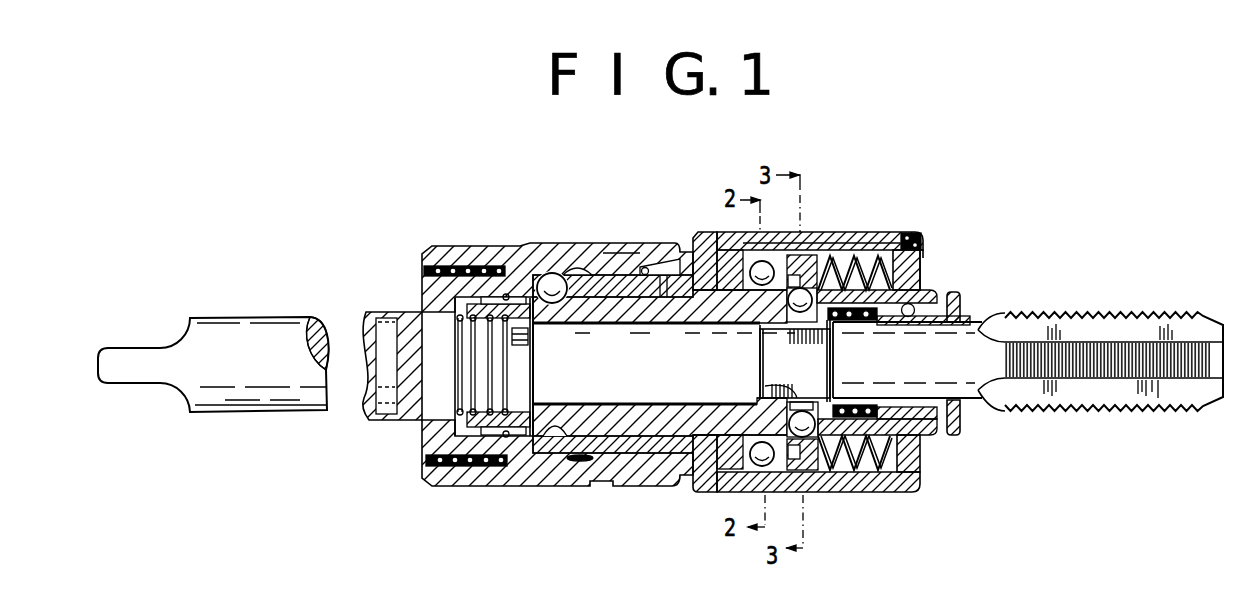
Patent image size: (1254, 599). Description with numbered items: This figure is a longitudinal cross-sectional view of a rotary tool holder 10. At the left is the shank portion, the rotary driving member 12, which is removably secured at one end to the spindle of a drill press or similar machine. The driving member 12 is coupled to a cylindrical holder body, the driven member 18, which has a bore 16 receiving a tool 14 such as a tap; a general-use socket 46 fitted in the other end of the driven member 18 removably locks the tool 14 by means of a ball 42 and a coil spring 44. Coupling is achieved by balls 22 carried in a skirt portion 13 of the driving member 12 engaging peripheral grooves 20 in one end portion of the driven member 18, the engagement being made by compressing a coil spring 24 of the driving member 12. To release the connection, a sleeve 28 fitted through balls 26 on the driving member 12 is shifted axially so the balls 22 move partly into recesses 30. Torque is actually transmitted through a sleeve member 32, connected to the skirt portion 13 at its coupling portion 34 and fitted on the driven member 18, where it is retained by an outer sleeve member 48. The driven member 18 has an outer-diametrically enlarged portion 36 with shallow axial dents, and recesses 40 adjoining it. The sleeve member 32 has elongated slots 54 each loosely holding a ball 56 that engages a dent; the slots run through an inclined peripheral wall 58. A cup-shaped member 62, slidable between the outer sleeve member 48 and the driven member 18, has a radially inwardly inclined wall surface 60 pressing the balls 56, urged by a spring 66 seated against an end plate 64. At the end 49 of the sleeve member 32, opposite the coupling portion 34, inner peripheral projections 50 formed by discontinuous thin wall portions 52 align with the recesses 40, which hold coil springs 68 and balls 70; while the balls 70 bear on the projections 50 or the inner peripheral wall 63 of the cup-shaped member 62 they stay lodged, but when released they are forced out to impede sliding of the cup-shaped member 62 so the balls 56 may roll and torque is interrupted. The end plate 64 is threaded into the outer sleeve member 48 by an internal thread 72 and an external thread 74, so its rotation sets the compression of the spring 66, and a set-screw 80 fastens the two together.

The rotary tool holder 10 is at (845, 174).
The rotary driving member 12 is at (278, 323).
The skirt portion 13 is at (622, 292).
The tool 14 is at (975, 404).
The bore 16 is at (960, 428).
The driven member 18 is at (682, 413).
The peripheral grooves 20 is at (553, 430).
The balls 22 is at (536, 300).
The coil spring 24 is at (457, 422).
The balls 26 is at (477, 267).
The sleeve 28 is at (545, 250).
The recesses 30 is at (582, 270).
The sleeve member 32 is at (690, 254).
The coupling portion 34 is at (677, 302).
The outer-diametrically enlarged portion 36 is at (730, 474).
The recesses 40 is at (765, 373).
The ball 42 is at (927, 325).
The coil spring 44 is at (873, 320).
The socket 46 is at (962, 304).
The outer sleeve member 48 is at (880, 238).
The end 49 is at (840, 321).
The inner peripheral projections 50 is at (823, 260).
The thin wall portions 52 is at (790, 256).
The elongated slots 54 is at (723, 265).
The ball 56 is at (757, 293).
The peripheral wall 58 is at (792, 305).
The radially inwardly inclined wall surface 60 is at (765, 262).
The cup-shaped member 62 is at (832, 464).
The inner peripheral wall 63 is at (795, 361).
The end plate 64 is at (912, 277).
The spring 66 is at (877, 464).
The coil springs 68 is at (772, 406).
The balls 70 is at (797, 363).
The internal thread 72 is at (888, 249).
The external thread 74 is at (925, 248).
The set-screw 80 is at (913, 238).